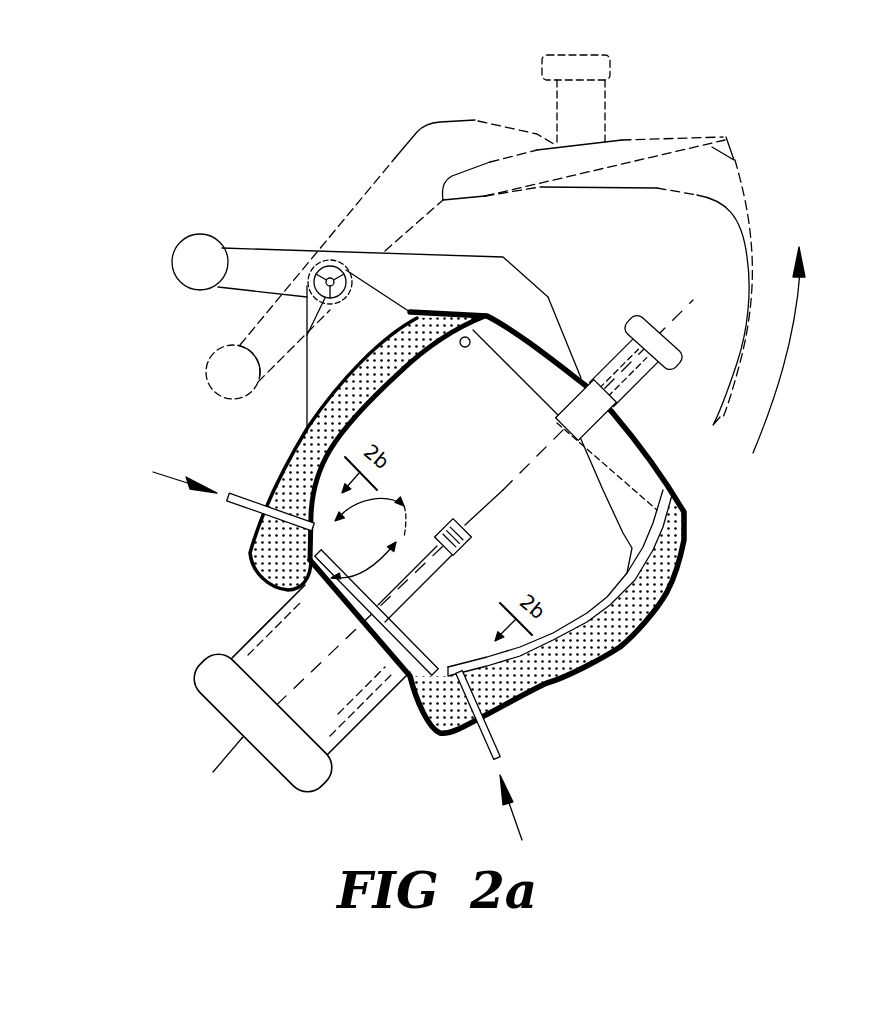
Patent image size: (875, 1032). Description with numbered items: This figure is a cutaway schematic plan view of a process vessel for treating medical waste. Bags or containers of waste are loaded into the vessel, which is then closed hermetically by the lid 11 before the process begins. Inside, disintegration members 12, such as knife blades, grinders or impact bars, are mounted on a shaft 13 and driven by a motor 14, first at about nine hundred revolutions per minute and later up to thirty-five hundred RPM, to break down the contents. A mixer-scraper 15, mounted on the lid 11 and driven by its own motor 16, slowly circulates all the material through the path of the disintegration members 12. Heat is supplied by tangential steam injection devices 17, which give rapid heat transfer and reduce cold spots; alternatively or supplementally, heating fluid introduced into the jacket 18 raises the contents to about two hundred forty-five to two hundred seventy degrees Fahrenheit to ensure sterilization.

The lid 11 is at (722, 148).
The disintegration members 12 is at (423, 645).
The shaft 13 is at (452, 558).
The motor 14 is at (350, 716).
The mixer-scraper 15 is at (750, 218).
The motor 16 is at (604, 97).
The steam injection devices 17 is at (175, 480).
The jacket 18 is at (580, 655).